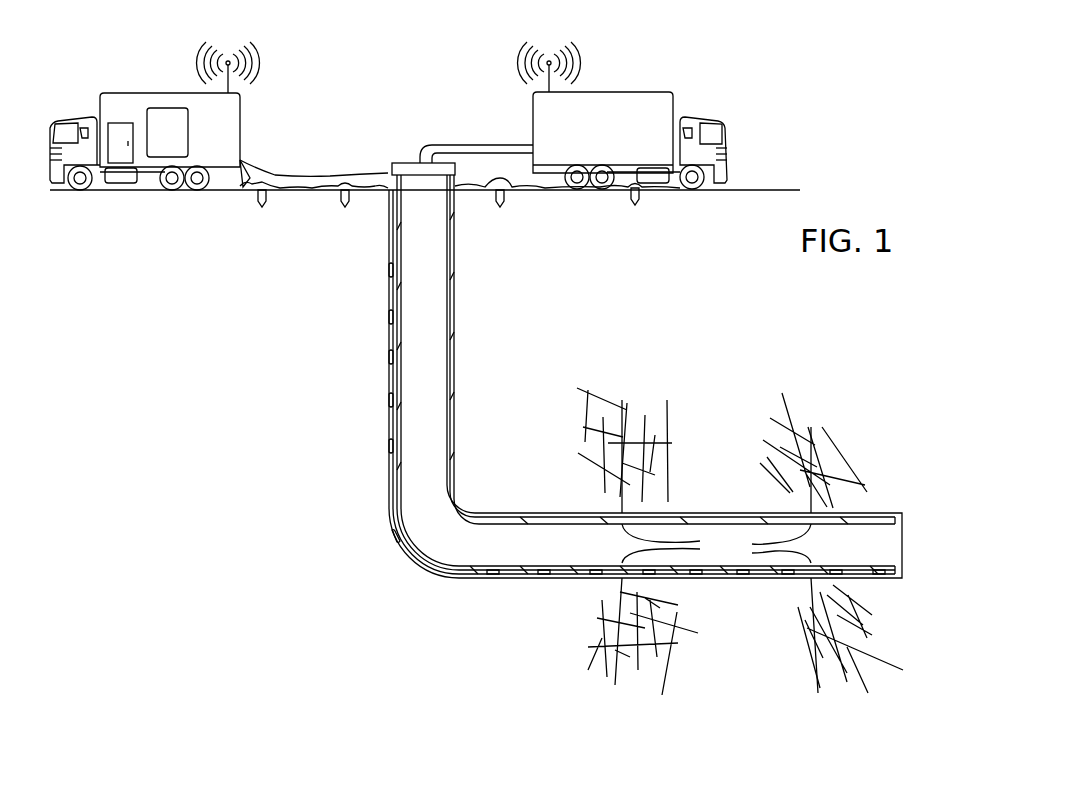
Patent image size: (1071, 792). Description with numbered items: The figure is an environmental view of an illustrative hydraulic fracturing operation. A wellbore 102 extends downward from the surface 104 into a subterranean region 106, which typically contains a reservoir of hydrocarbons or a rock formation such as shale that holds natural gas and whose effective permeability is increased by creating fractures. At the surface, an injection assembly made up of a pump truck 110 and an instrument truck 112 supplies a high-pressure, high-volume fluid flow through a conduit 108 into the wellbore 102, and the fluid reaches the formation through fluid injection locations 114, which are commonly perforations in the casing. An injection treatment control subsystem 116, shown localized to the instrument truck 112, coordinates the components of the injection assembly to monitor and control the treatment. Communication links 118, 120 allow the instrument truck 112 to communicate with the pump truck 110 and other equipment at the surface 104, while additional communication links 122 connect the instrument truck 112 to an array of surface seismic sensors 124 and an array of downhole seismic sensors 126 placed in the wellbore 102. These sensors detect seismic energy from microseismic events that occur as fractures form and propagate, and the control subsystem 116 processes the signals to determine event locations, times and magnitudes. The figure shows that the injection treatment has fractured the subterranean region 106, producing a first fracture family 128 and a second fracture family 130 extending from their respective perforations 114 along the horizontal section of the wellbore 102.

The wellbore 102 is at (453, 258).
The surface 104 is at (735, 193).
The subterranean region 106 is at (764, 661).
The conduit 108 is at (450, 144).
The pump truck 110 is at (667, 96).
The instrument truck 112 is at (103, 99).
The fluid injection location 114 is at (716, 543).
The injection treatment control subsystem 116 is at (162, 108).
The communication link 118 is at (251, 46).
The communication link 120 is at (572, 47).
The communication link 122 is at (244, 185).
The surface seismic sensor 124 is at (343, 205).
The downhole seismic sensor 126 is at (392, 400).
The first fracture family 128 is at (670, 382).
The second fracture family 130 is at (853, 382).